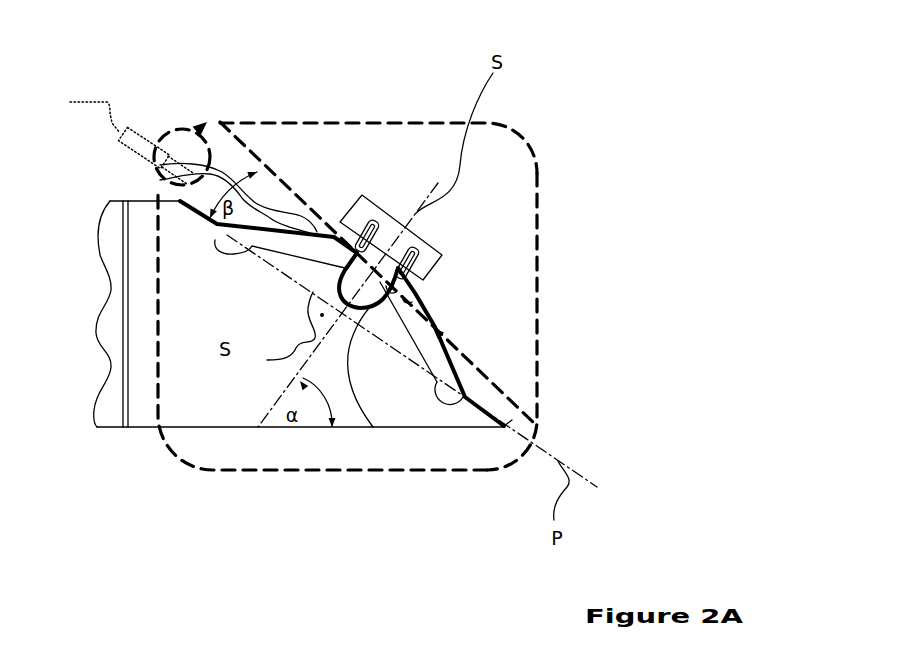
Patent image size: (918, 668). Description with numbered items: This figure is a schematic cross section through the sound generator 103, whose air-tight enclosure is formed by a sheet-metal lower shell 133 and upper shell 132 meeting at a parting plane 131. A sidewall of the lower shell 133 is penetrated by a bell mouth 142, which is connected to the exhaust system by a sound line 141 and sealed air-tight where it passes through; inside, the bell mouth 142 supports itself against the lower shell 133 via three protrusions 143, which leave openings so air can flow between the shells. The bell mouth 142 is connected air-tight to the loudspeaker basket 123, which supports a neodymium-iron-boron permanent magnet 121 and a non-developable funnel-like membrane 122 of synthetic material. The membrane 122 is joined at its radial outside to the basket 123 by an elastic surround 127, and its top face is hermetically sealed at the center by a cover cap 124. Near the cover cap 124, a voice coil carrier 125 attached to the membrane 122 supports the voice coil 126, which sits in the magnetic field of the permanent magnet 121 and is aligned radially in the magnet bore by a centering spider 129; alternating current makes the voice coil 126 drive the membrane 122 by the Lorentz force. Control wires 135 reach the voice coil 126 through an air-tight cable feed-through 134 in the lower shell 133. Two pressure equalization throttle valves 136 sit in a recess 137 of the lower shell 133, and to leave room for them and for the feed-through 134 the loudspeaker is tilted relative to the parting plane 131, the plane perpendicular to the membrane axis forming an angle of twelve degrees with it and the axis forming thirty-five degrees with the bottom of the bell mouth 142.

The sound generator 103 is at (575, 297).
The permanent magnet 121 is at (375, 204).
The funnel-like membrane 122 is at (427, 335).
The loudspeaker basket 123 is at (437, 363).
The cover cap 124 is at (373, 427).
The voice coil carrier 125 is at (440, 243).
The voice coil 126 is at (346, 228).
The elastic surround 127 is at (215, 243).
The centering spider 129 is at (412, 303).
The parting plane 131 is at (540, 428).
The upper shell 132 is at (538, 214).
The lower shell 133 is at (313, 472).
The cable feed-through 134 is at (143, 140).
The control wires 135 is at (230, 170).
The pressure equalization valves 136 is at (178, 143).
The recess 137 is at (190, 128).
The sound line 141 is at (110, 428).
The bell mouth 142 is at (223, 428).
The protrusions 143 is at (534, 427).